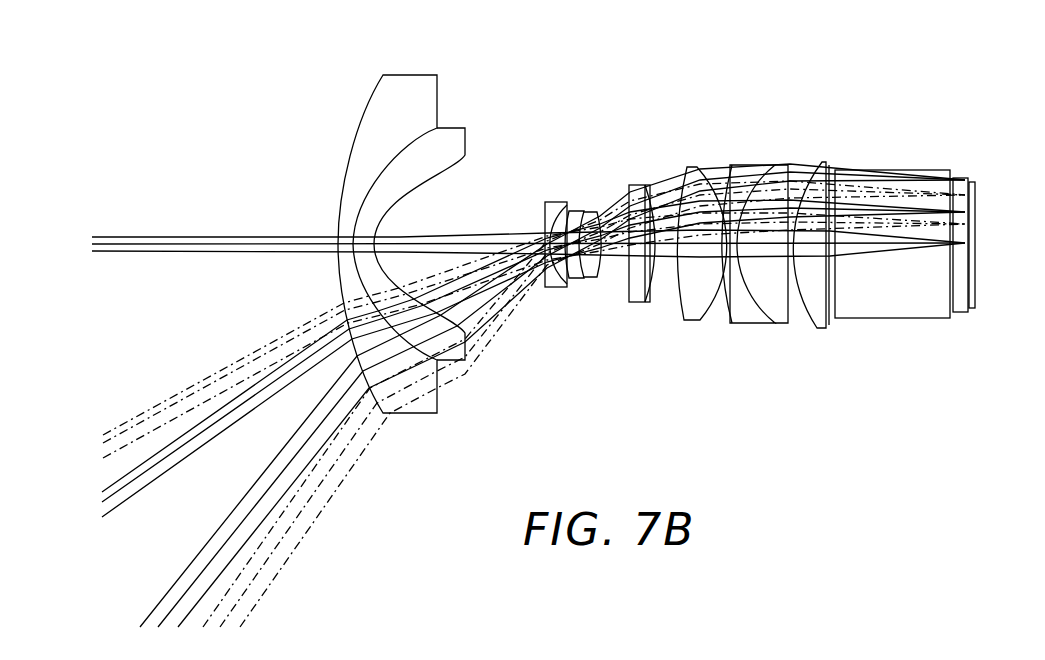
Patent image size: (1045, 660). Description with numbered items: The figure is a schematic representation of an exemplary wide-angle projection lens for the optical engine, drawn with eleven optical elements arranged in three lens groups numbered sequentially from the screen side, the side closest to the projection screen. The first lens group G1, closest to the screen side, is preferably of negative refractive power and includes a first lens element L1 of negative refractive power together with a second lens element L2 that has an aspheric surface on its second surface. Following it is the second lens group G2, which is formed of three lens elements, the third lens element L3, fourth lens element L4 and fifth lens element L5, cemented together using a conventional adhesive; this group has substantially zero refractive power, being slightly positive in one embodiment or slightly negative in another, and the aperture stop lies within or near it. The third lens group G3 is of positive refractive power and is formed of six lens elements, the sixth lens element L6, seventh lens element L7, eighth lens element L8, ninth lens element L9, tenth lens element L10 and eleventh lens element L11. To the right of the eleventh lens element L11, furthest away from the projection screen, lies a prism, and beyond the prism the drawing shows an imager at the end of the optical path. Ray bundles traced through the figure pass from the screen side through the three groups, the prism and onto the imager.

The first lens group G1 is at (475, 68).
The second lens group G2 is at (602, 193).
The third lens group G3 is at (830, 155).
The first lens element L1 is at (410, 413).
The second lens element L2 is at (453, 352).
The third lens element L3 is at (556, 289).
The fourth lens element L4 is at (572, 281).
The fifth lens element L5 is at (593, 283).
The sixth lens element L6 is at (637, 303).
The seventh lens element L7 is at (656, 304).
The eighth lens element L8 is at (700, 306).
The ninth lens element L9 is at (745, 309).
The tenth lens element L10 is at (778, 311).
The eleventh lens element L11 is at (813, 321).
The element prism is at (905, 170).
The element imager is at (972, 184).